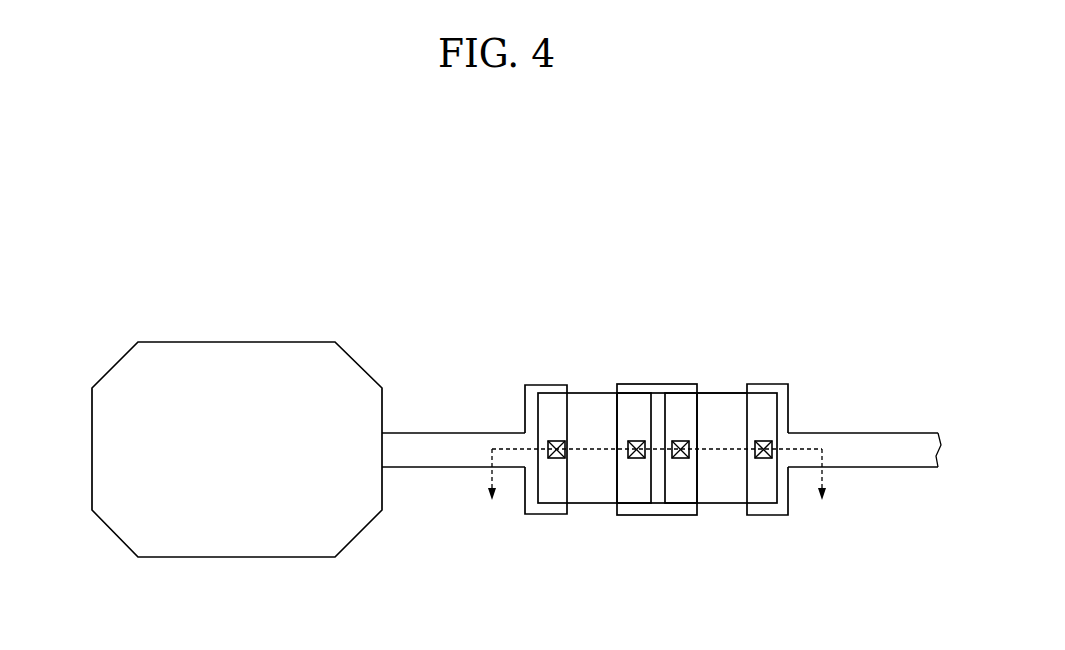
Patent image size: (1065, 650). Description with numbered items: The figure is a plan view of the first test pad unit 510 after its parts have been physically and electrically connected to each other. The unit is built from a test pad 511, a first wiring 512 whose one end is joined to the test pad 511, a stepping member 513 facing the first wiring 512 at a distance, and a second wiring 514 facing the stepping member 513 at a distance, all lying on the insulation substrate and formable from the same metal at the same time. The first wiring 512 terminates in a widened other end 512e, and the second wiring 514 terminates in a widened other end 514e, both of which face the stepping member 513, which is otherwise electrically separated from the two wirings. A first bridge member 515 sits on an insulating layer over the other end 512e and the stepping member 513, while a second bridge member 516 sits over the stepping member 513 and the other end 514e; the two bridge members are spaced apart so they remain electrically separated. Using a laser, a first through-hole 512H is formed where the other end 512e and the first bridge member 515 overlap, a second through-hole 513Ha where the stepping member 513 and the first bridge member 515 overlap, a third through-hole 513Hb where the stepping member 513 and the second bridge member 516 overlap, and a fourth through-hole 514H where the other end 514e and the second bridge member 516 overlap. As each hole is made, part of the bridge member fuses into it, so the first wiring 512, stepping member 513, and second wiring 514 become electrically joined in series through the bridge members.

The first test pad unit 510 is at (458, 300).
The test pad 511 is at (237, 426).
The first wiring 512 is at (453, 426).
The other end of the first wiring 512e is at (545, 385).
The first through-hole 512H is at (553, 458).
The stepping member 513 is at (657, 384).
The second through-hole 513Ha is at (636, 458).
The third through-hole 513Hb is at (681, 458).
The second wiring 514 is at (864, 426).
The other end of the second wiring 514e is at (768, 384).
The fourth through-hole 514H is at (765, 458).
The first bridge member 515 is at (657, 477).
The second bridge member 516 is at (723, 393).